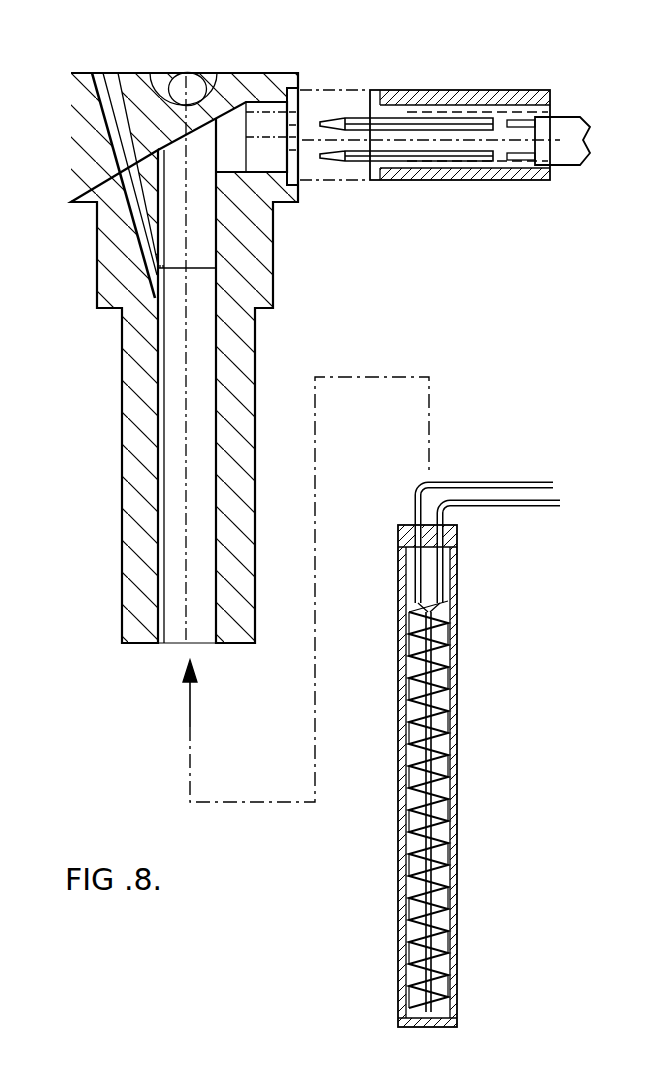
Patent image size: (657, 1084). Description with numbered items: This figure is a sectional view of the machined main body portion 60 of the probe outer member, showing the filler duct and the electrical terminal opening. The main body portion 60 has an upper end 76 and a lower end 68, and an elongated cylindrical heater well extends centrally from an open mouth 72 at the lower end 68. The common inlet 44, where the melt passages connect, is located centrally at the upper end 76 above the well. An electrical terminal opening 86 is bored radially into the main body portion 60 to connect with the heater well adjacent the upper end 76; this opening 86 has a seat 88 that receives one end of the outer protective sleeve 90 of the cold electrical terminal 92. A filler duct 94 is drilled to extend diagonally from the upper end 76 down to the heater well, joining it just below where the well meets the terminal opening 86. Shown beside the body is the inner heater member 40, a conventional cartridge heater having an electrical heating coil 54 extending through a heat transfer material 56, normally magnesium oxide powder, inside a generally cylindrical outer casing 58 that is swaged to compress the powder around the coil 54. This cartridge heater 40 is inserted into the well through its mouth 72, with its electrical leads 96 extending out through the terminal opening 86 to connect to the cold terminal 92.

The inner heater member 40 is at (457, 707).
The common inlet 44 is at (187, 82).
The electrical heating coil 54 is at (455, 770).
The heat transfer material 56 is at (445, 818).
The outer casing 58 is at (457, 890).
The main body portion 60 is at (132, 398).
The lower end 68 is at (128, 625).
The open mouth 72 is at (168, 645).
The upper end 76 is at (82, 73).
The electrical terminal opening 86 is at (270, 120).
The seat 88 is at (300, 90).
The outer protective sleeve 90 is at (462, 95).
The cold electrical terminal 92 is at (490, 120).
The filler duct 94 is at (124, 162).
The electrical leads 96 is at (537, 503).